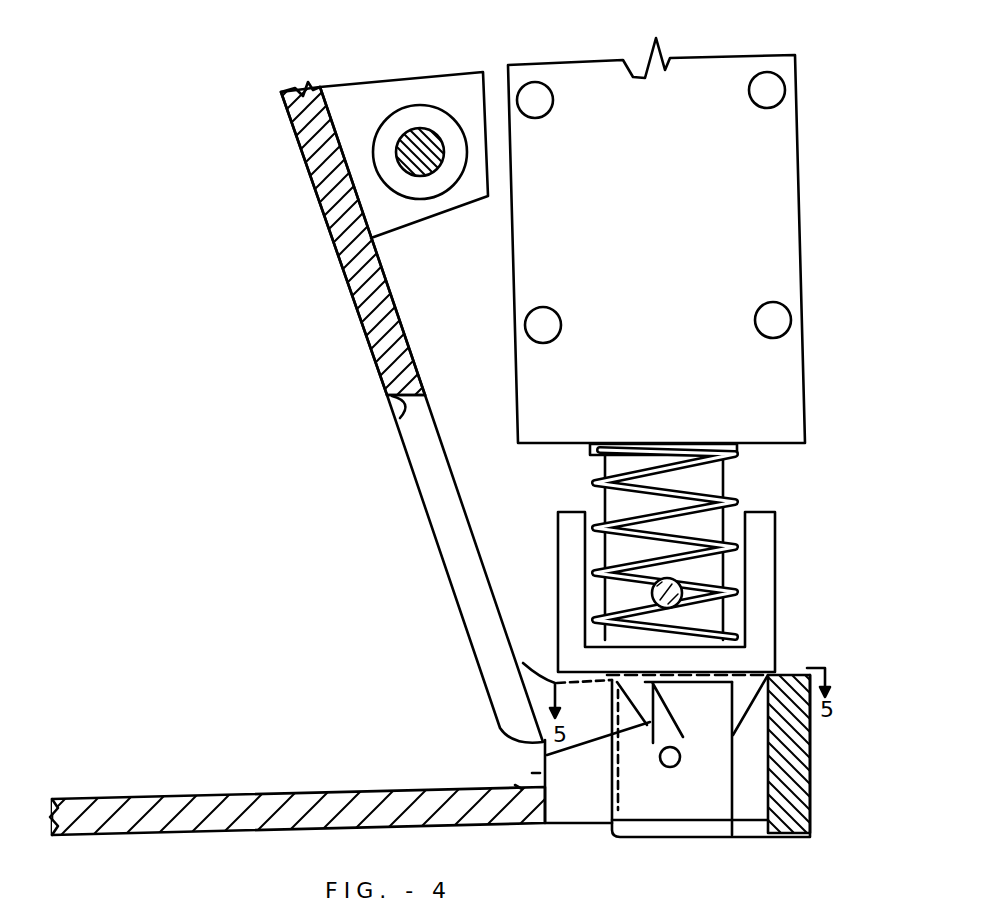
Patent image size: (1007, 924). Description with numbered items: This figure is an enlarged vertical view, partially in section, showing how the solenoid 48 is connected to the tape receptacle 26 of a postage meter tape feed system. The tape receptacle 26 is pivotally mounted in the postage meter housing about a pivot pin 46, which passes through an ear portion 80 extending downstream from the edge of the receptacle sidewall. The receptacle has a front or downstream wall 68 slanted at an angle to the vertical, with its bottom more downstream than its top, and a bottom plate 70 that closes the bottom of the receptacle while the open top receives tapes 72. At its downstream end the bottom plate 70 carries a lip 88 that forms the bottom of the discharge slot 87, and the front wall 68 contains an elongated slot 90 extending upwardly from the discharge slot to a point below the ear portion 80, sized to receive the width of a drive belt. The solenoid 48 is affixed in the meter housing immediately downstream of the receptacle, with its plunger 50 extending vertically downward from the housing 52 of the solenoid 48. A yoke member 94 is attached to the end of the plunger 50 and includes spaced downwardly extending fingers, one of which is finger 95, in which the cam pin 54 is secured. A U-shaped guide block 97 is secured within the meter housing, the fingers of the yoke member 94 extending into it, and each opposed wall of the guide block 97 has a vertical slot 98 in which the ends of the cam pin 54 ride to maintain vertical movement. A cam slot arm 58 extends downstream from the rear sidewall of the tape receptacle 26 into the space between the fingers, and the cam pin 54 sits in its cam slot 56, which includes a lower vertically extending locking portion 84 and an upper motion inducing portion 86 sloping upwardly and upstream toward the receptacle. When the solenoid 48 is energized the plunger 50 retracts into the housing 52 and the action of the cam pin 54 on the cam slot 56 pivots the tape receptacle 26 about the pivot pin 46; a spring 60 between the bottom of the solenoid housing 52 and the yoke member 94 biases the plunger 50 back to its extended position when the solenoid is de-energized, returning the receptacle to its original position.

The tape receptacle 26 is at (300, 143).
The pivot pin 46 is at (415, 160).
The solenoid 48 is at (703, 70).
The plunger 50 is at (710, 483).
The housing of the solenoid 52 is at (783, 192).
The cam pin 54 is at (682, 762).
The cam slot 56 is at (543, 742).
The cam slot arm 58 is at (732, 835).
The spring 60 is at (600, 470).
The front or downstream wall 68 is at (391, 355).
The bottom plate 70 is at (195, 815).
The tapes 72 is at (400, 418).
The ear portion 80 is at (370, 80).
The locking portion 84 is at (680, 736).
The motion inducing portion 86 is at (657, 740).
The discharge slot 87 is at (532, 773).
The lip 88 is at (518, 788).
The elongated slot 90 is at (461, 532).
The yoke member 94 is at (763, 637).
The finger 95 is at (777, 672).
The U-shaped guide block 97 is at (813, 805).
The vertical slot 98 is at (660, 800).